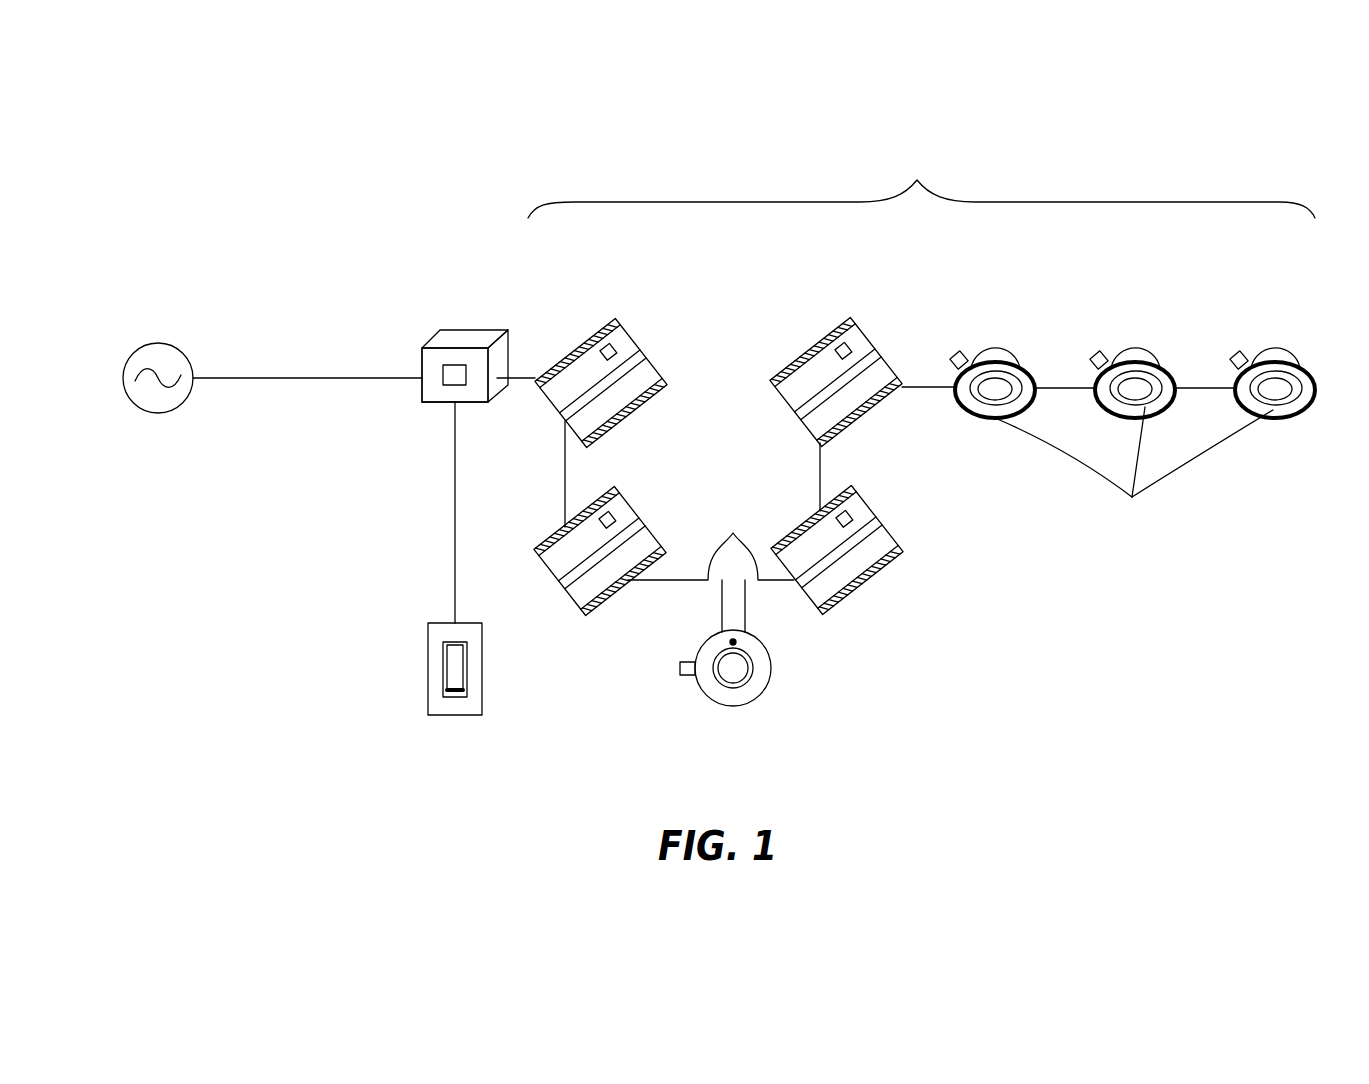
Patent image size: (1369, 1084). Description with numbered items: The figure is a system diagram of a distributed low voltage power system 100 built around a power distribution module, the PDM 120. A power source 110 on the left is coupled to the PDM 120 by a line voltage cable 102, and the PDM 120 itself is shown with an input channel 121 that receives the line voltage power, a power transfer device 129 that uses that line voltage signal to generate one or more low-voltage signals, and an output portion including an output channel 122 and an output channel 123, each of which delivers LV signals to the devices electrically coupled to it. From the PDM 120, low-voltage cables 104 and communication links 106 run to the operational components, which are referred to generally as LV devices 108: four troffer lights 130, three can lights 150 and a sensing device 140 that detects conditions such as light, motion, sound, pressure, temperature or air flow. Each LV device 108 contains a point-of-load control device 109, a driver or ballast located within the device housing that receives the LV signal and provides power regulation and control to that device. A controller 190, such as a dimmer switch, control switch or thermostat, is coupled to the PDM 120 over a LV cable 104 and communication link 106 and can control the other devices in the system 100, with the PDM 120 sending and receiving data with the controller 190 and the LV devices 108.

The distributed power system 100 is at (183, 212).
The line voltage cable 102 is at (292, 377).
The low-voltage cable 104 is at (773, 419).
The communication link 106 is at (453, 548).
The LV device 108 is at (921, 180).
The point-of-load control device 109 is at (613, 342).
The power source 110 is at (158, 343).
The PDM 120 is at (458, 364).
The input channel 121 is at (422, 378).
The output channel 122 is at (455, 405).
The output channel 123 is at (498, 378).
The power transfer device 129 is at (455, 388).
The troffer light 130 is at (610, 320).
The sensing device 140 is at (733, 705).
The can light 150 is at (1135, 451).
The controller 190 is at (428, 668).